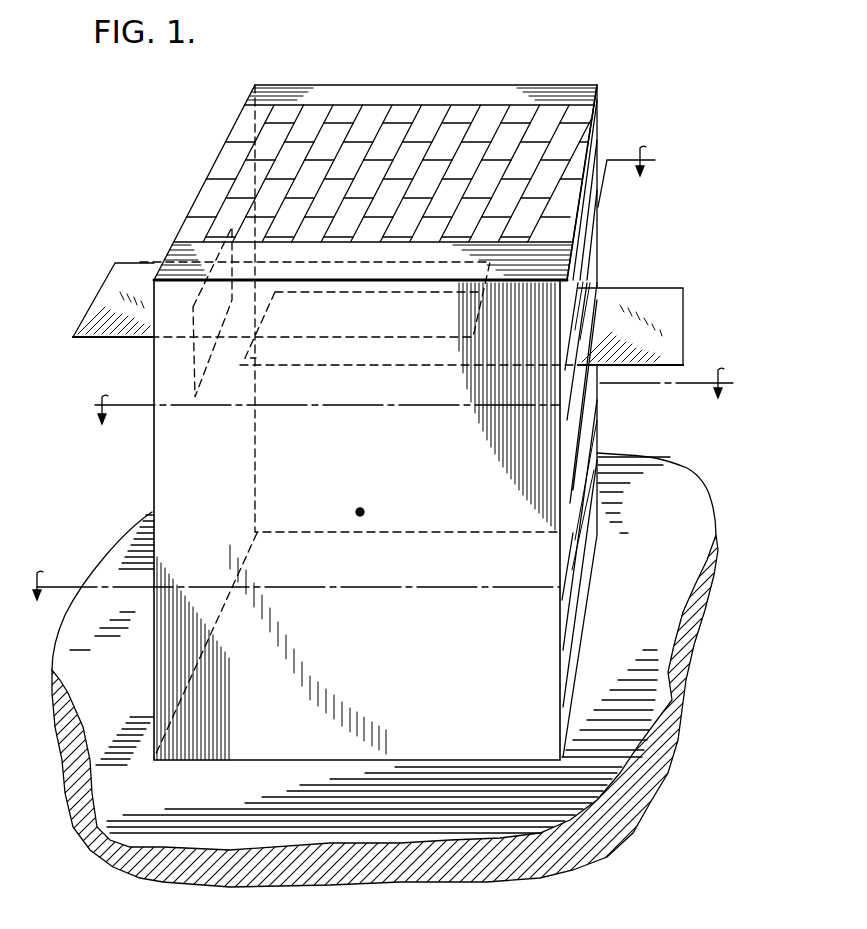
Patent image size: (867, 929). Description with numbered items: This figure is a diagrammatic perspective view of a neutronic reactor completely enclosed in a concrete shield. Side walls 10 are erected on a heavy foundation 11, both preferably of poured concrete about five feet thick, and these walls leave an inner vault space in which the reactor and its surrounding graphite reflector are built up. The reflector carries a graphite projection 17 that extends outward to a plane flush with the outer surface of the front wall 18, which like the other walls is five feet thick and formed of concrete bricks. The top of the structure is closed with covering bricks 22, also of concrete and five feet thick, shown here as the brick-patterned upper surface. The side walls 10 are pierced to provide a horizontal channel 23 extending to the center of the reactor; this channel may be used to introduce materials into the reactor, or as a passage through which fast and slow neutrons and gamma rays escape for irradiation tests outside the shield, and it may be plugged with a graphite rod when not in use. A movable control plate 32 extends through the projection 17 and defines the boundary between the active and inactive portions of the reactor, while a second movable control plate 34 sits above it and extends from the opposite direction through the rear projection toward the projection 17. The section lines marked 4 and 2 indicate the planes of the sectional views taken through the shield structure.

The side walls 10 is at (390, 97).
The foundation 11 is at (690, 491).
The covering bricks 22 is at (466, 150).
The graphite projection 17 is at (583, 283).
The front wall 18 is at (578, 448).
The movable control plate 32 is at (667, 287).
The second movable control plate 34 is at (110, 287).
The horizontal channel 23 is at (356, 509).
The section line 4 is at (371, 285).
The section line 2 is at (381, 485).